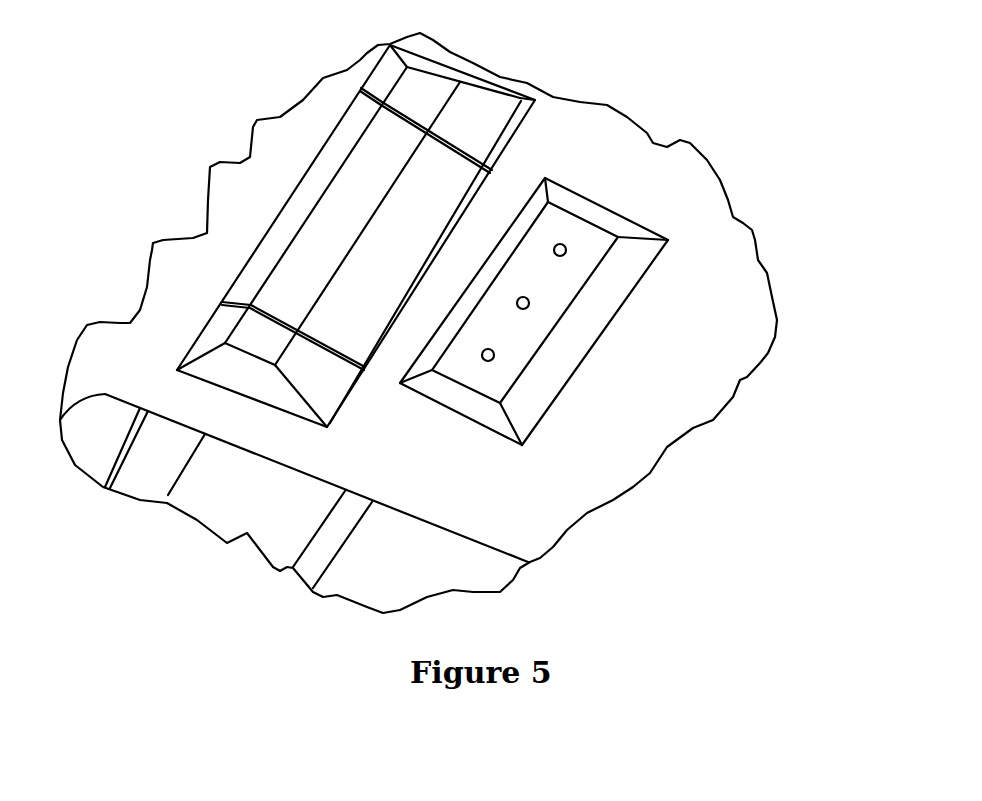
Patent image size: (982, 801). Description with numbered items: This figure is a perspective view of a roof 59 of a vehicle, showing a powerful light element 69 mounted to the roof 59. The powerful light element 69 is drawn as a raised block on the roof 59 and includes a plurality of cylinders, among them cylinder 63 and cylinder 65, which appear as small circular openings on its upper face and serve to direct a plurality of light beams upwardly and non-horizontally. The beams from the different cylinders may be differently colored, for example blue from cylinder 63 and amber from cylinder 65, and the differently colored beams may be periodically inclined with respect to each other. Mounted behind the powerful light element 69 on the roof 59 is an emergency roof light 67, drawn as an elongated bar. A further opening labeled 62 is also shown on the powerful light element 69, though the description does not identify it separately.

The roof 59 is at (466, 323).
The hole 62 is at (556, 383).
The cylinder 63 is at (595, 325).
The cylinder 65 is at (668, 209).
The emergency roof light 67 is at (315, 250).
The powerful light element 69 is at (614, 311).